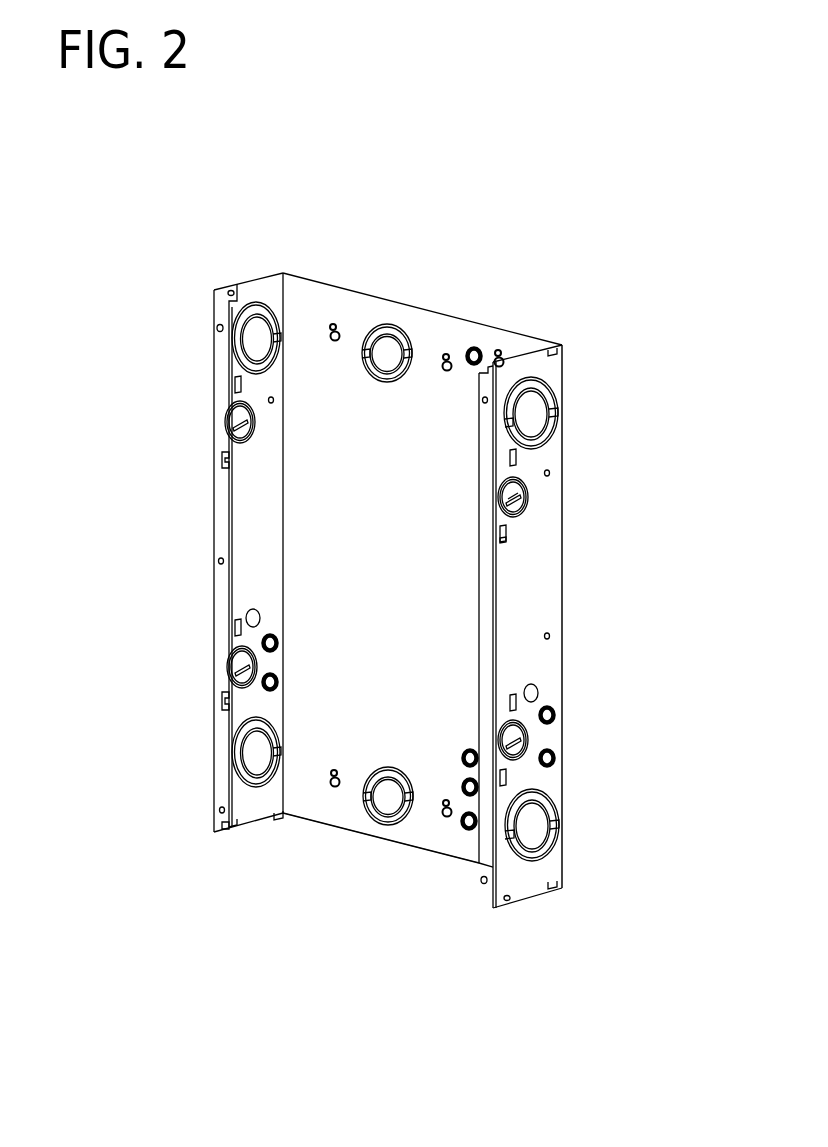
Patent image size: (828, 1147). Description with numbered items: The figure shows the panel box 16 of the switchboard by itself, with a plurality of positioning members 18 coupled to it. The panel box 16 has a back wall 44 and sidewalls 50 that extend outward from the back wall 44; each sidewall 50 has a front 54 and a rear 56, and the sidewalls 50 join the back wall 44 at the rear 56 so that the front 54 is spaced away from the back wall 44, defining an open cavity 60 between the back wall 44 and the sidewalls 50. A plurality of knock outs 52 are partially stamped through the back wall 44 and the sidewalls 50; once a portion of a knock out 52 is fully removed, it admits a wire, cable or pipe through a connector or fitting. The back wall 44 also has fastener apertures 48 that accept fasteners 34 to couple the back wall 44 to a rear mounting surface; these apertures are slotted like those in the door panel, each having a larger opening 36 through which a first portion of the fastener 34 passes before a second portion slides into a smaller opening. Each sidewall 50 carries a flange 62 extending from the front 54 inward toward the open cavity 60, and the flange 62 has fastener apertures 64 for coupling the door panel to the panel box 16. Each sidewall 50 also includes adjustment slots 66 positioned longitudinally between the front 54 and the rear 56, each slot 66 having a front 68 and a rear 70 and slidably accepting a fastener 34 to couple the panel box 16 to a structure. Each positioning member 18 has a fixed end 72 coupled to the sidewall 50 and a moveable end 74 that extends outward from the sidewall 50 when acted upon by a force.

The panel box 16 is at (590, 540).
The positioning member 18 is at (556, 440).
The fastener 34 is at (331, 272).
The larger opening 36 is at (338, 330).
The back wall 44 is at (371, 320).
The fastener aperture 48 is at (330, 337).
The sidewall 50 is at (266, 521).
The knock out 52 is at (256, 303).
The front 54 is at (463, 862).
The rear 56 is at (564, 858).
The open cavity 60 is at (396, 525).
The flange 62 is at (222, 604).
The fastener aperture 64 is at (217, 330).
The adjustment slot 66 is at (579, 494).
The front 68 is at (525, 505).
The rear 70 is at (524, 488).
The fixed end 72 is at (508, 536).
The moveable end 74 is at (504, 543).